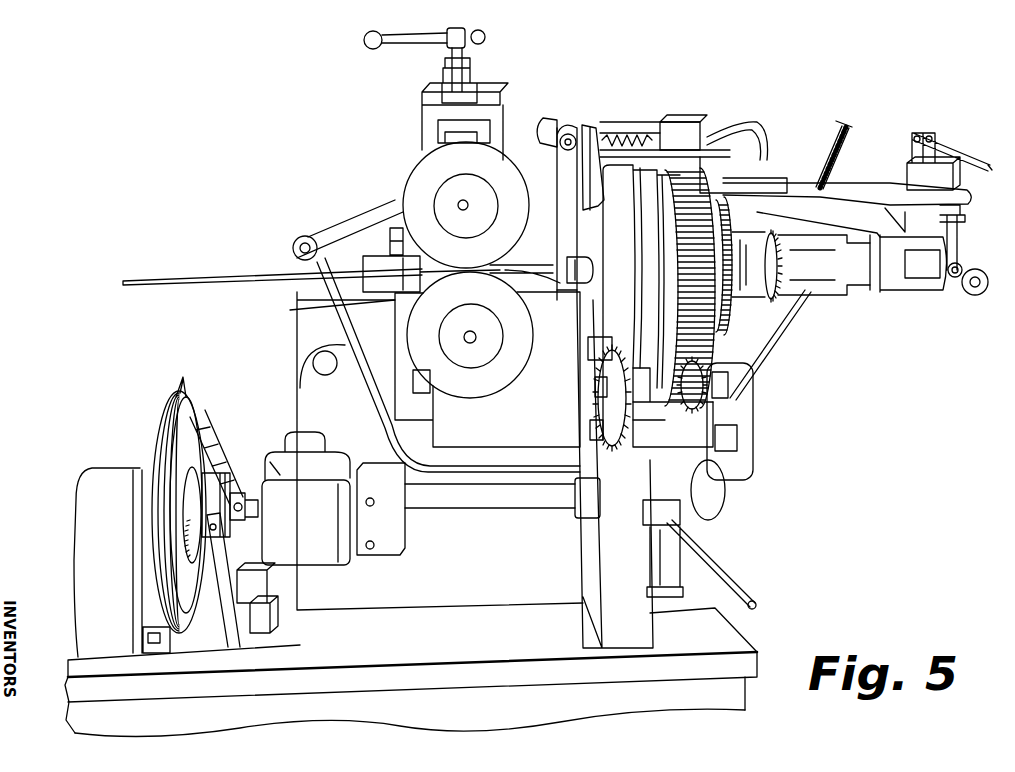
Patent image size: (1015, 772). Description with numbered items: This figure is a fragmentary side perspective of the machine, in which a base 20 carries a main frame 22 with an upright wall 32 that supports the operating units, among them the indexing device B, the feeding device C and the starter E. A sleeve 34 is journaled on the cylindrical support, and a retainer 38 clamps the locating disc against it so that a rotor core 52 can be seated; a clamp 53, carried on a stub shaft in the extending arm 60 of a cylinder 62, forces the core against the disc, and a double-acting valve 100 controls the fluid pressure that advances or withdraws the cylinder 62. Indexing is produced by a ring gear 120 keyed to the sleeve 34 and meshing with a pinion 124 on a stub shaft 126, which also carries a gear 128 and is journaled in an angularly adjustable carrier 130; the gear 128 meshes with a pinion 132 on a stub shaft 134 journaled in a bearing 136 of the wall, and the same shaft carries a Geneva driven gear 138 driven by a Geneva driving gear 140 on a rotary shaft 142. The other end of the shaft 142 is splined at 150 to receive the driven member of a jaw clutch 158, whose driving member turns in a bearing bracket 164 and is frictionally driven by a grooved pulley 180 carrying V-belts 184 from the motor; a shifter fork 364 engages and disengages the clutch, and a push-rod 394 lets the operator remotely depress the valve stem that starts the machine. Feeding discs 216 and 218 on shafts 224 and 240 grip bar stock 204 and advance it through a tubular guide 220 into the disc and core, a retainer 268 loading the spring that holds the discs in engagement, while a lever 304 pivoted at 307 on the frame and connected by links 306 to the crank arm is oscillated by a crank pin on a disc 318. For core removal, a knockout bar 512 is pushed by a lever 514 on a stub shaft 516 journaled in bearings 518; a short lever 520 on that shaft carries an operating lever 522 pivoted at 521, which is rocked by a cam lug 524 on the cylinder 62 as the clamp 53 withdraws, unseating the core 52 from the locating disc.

The base 20 is at (745, 645).
The main frame 22 is at (570, 597).
The upright wall 32 is at (598, 556).
The sleeve 34 is at (720, 233).
The retainer 38 is at (722, 212).
The rotor core 52 is at (760, 294).
The clamp 53 is at (790, 290).
The extending arm 60 is at (883, 292).
The cylinder 62 is at (797, 197).
The double-acting valve 100 is at (912, 176).
The ring gear 120 is at (700, 239).
The pinion 124 is at (703, 403).
The stub shaft 126 is at (595, 388).
The gear 128 is at (605, 340).
The carrier 130 is at (665, 403).
The pinion 132 is at (608, 441).
The stub shaft 134 is at (592, 430).
The bearing 136 is at (660, 432).
The Geneva driven gear 138 is at (740, 470).
The Geneva driving gear 140 is at (715, 490).
The rotary shaft 142 is at (468, 508).
The splined shaft end 150 is at (250, 492).
The jaw clutch 158 is at (222, 490).
The bearing bracket 164 is at (108, 470).
The pulley 180 is at (222, 394).
The V-belt 184 is at (198, 378).
The bar stock 204 is at (200, 268).
The feeding disc 216 is at (462, 388).
The feeding disc 218 is at (412, 190).
The tubular guide 220 is at (553, 266).
The shaft 224 is at (478, 348).
The shaft 240 is at (470, 218).
The retainer 268 is at (444, 79).
The lever 304 is at (298, 326).
The links 306 is at (352, 220).
The pivot 307 is at (330, 372).
The disc 318 is at (294, 438).
The shifter fork 364 is at (232, 606).
The push-rod 394 is at (763, 340).
The knockout bar 512 is at (586, 266).
The lever 514 is at (563, 216).
The stub shaft 516 is at (570, 132).
The bearings 518 is at (542, 118).
The short lever 520 is at (602, 122).
The pivot 521 is at (605, 122).
The operating lever 522 is at (730, 116).
The cam lug 524 is at (792, 160).
The indexing device B is at (704, 364).
The feeding device C is at (468, 268).
The starter E is at (838, 124).